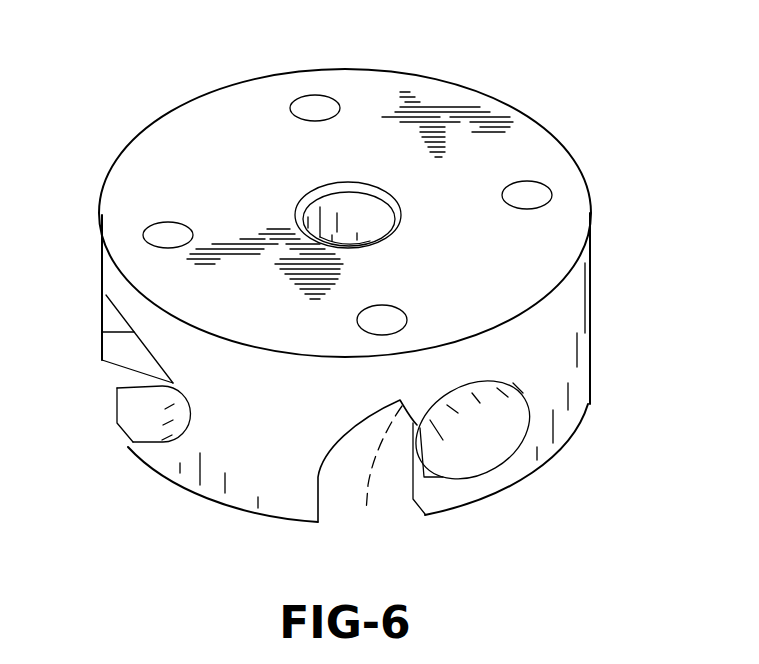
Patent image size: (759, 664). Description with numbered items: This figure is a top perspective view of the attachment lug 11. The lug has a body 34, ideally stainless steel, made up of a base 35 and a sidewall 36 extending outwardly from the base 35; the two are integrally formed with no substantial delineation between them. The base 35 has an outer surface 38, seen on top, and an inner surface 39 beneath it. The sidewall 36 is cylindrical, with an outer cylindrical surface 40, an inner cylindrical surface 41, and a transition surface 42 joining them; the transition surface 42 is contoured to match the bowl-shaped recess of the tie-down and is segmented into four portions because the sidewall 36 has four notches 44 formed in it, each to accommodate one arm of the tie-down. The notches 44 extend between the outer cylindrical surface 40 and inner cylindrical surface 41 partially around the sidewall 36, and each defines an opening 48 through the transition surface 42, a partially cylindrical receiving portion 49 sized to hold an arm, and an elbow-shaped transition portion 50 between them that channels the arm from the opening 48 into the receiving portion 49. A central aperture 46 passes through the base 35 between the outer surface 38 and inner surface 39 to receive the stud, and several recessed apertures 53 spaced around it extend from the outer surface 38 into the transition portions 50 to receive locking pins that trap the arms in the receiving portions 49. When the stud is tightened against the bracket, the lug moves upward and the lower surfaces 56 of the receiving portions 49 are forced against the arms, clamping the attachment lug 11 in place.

The attachment lug 11 is at (90, 128).
The body 34 is at (593, 365).
The base 35 is at (157, 278).
The sidewall 36 is at (243, 490).
The outer surface 38 is at (162, 137).
The inner surface 39 is at (357, 243).
The outer cylindrical surface 40 is at (287, 467).
The inner cylindrical surface 41 is at (377, 473).
The transition surface 42 is at (206, 499).
The notches 44 is at (143, 418).
The aperture 46 is at (370, 247).
The openings 48 is at (118, 371).
The receiving portions 49 is at (187, 410).
The transition portions 50 is at (147, 345).
The apertures 53 is at (310, 112).
The lower surfaces 56 is at (157, 432).